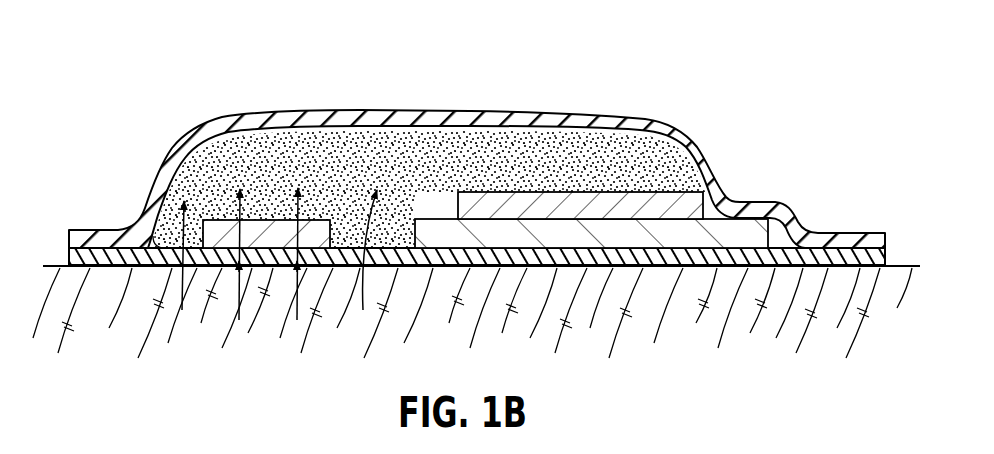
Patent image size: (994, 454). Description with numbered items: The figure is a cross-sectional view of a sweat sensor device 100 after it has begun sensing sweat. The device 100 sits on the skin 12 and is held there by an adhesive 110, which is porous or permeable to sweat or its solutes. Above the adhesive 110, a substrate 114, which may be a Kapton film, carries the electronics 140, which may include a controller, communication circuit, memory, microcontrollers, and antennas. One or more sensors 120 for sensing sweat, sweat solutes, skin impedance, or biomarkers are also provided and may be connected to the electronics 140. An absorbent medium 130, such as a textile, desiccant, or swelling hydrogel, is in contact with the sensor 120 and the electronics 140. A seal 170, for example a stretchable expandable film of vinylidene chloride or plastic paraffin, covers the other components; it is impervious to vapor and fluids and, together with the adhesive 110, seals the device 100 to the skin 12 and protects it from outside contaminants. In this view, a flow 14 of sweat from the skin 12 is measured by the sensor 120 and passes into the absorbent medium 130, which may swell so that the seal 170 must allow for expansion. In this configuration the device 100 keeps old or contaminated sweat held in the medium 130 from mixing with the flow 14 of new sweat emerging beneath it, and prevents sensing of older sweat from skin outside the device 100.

The sweat sensor device 100 is at (137, 55).
The adhesive 110 is at (845, 255).
The substrate 114 is at (725, 223).
The sensor 120 is at (213, 220).
The absorbent medium 130 is at (287, 152).
The electronics 140 is at (653, 190).
The seal 170 is at (428, 110).
The skin 12 is at (590, 330).
The flow of sweat 14 is at (183, 294).